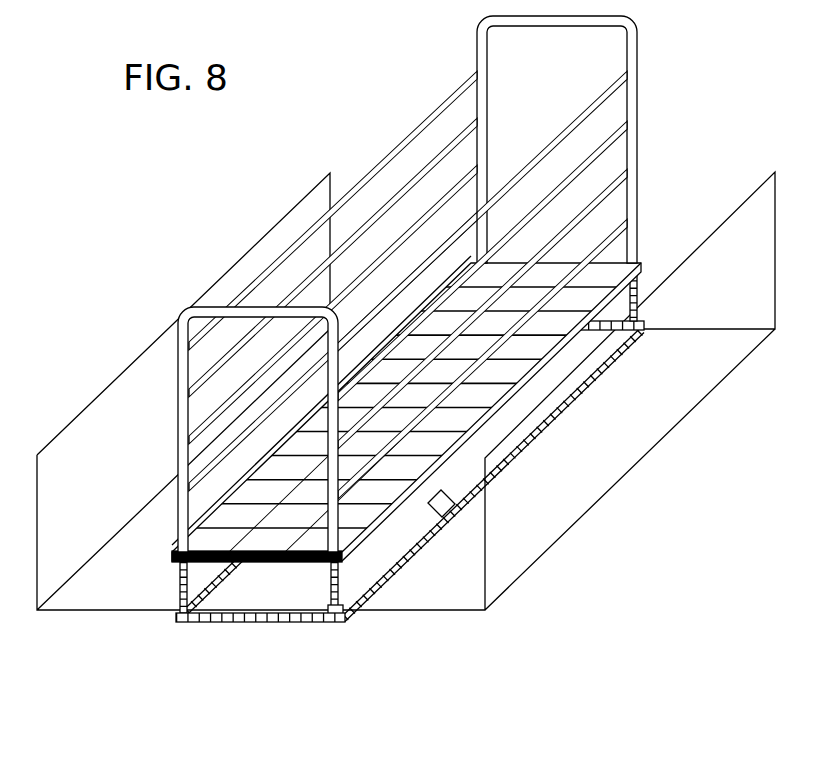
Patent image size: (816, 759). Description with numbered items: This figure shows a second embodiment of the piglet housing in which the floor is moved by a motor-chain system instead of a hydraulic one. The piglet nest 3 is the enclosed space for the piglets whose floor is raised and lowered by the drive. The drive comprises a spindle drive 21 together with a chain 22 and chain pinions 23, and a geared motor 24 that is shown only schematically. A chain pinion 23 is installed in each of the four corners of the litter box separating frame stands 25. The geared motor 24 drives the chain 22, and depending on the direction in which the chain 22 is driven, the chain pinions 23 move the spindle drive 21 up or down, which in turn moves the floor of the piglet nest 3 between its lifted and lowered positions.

The piglet nest 3 is at (112, 580).
The spindle drive 21 is at (326, 590).
The chain 22 is at (421, 543).
The chain pinion 23 is at (340, 620).
The geared motor 24 is at (441, 492).
The litter box separating frame stand 25 is at (331, 502).